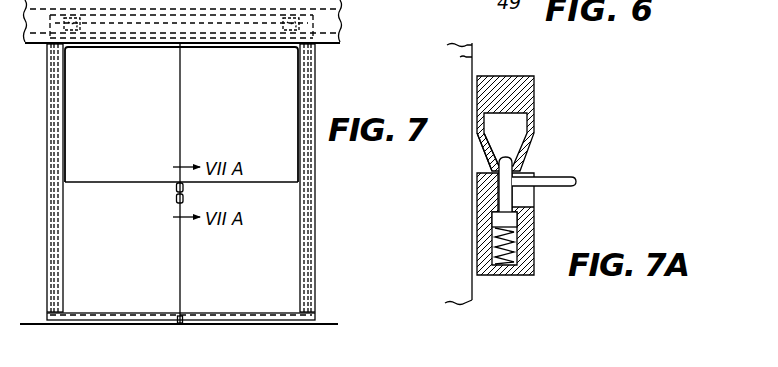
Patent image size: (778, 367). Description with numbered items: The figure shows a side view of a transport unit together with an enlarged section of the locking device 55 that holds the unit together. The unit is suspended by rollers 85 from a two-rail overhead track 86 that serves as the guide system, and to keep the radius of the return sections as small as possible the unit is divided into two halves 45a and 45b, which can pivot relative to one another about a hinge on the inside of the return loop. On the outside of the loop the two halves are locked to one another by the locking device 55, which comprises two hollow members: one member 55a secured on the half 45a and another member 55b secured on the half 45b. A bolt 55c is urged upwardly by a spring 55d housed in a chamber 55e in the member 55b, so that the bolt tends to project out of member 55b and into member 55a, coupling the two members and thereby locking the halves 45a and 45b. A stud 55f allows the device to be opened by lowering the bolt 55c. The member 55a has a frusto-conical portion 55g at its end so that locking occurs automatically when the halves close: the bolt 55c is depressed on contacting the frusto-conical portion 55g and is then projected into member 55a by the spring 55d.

In FIG. 7, the half of transport unit 45a is at (239, 161).
In FIG. 7A, the half of transport unit 45a is at (472, 51).
In FIG. 7, the half of transport unit 45b is at (122, 161).
In FIG. 7, the locking device 55 is at (168, 195).
In FIG. 7A, the hollow member 55a is at (534, 92).
In FIG. 7A, the hollow member 55b is at (511, 276).
In FIG. 7A, the bolt 55c is at (514, 156).
In FIG. 7A, the spring 55d is at (517, 237).
In FIG. 7A, the chamber 55e is at (492, 236).
In FIG. 7A, the stud 55f is at (578, 182).
In FIG. 7A, the frusto-conical portion 55g is at (490, 168).
In FIG. 7, the rollers 85 is at (72, 27).
In FIG. 7, the two-rail overhead track 86 is at (340, 33).